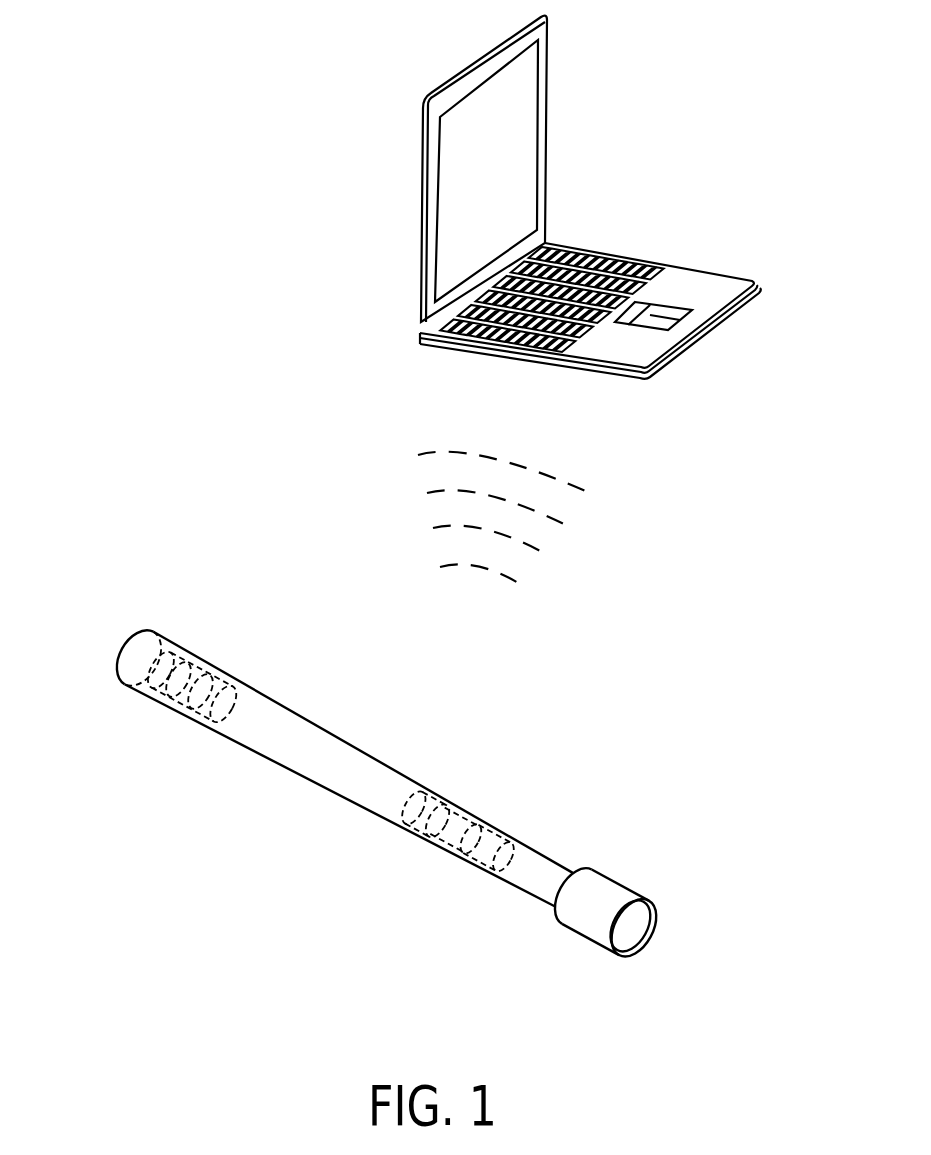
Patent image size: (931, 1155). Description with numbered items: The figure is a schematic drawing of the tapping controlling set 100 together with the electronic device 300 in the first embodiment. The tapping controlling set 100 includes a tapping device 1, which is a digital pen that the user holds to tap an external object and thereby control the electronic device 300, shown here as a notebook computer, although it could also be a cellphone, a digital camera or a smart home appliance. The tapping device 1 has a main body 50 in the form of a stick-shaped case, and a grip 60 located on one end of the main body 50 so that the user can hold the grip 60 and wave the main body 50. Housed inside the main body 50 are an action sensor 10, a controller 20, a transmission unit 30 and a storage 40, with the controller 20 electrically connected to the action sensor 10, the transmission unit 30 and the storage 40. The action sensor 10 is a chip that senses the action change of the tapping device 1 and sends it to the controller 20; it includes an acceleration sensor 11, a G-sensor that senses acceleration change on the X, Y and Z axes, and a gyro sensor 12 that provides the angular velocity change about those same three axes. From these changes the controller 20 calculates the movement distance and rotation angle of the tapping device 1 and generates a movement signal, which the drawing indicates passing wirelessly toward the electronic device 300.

The tapping device 1 is at (182, 816).
The tapping controlling set 100 is at (210, 925).
The action sensor 10 is at (185, 703).
The acceleration sensor 11 is at (175, 677).
The gyro sensor 12 is at (197, 678).
The controller 20 is at (427, 807).
The transmission unit 30 is at (457, 820).
The storage 40 is at (493, 843).
The main body 50 is at (297, 722).
The grip 60 is at (613, 893).
The electronic device 300 is at (626, 115).